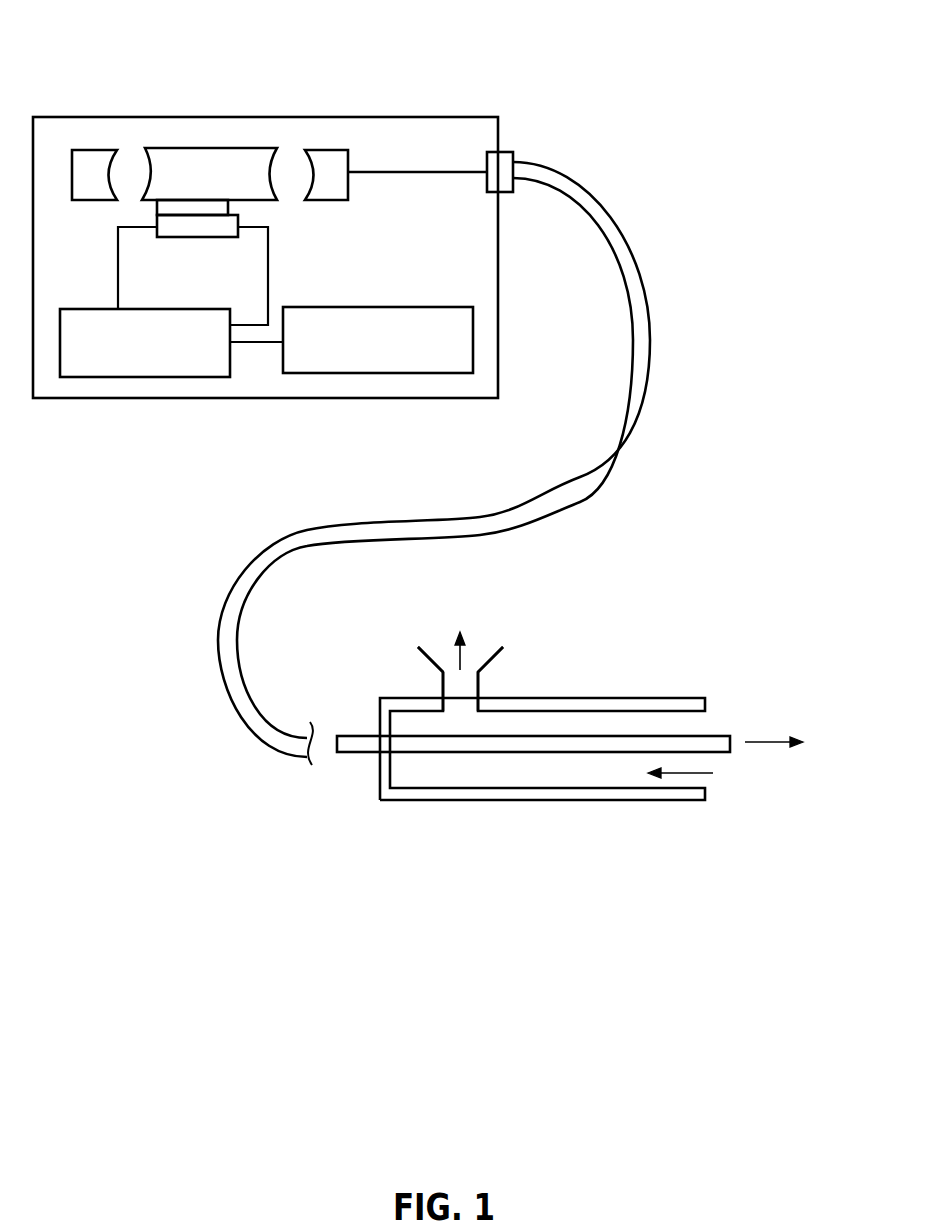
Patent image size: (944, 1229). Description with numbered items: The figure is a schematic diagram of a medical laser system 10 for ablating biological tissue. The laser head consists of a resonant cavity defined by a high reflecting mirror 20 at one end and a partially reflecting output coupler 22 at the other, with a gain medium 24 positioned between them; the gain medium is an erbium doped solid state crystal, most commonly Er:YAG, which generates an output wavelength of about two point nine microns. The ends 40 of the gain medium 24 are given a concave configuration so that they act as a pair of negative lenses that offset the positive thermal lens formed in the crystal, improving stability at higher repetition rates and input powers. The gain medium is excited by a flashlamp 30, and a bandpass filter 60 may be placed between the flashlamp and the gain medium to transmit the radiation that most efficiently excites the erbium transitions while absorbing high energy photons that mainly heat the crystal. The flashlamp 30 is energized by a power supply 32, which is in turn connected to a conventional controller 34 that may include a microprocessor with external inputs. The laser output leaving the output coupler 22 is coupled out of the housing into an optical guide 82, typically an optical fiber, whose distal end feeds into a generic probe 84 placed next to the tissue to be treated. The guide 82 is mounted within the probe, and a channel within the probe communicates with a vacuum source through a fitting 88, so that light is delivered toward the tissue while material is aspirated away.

The laser system 10 is at (468, 52).
The high reflecting mirror 20 is at (80, 148).
The partially reflecting output coupler 22 is at (330, 148).
The gain medium 24 is at (208, 134).
The ends of the gain medium 40 is at (146, 172).
The bandpass filter 60 is at (157, 203).
The flashlamp 30 is at (243, 220).
The power supply 32 is at (168, 378).
The controller 34 is at (338, 375).
The optical guide 82 is at (638, 258).
The probe 84 is at (695, 723).
The fitting 88 is at (480, 683).